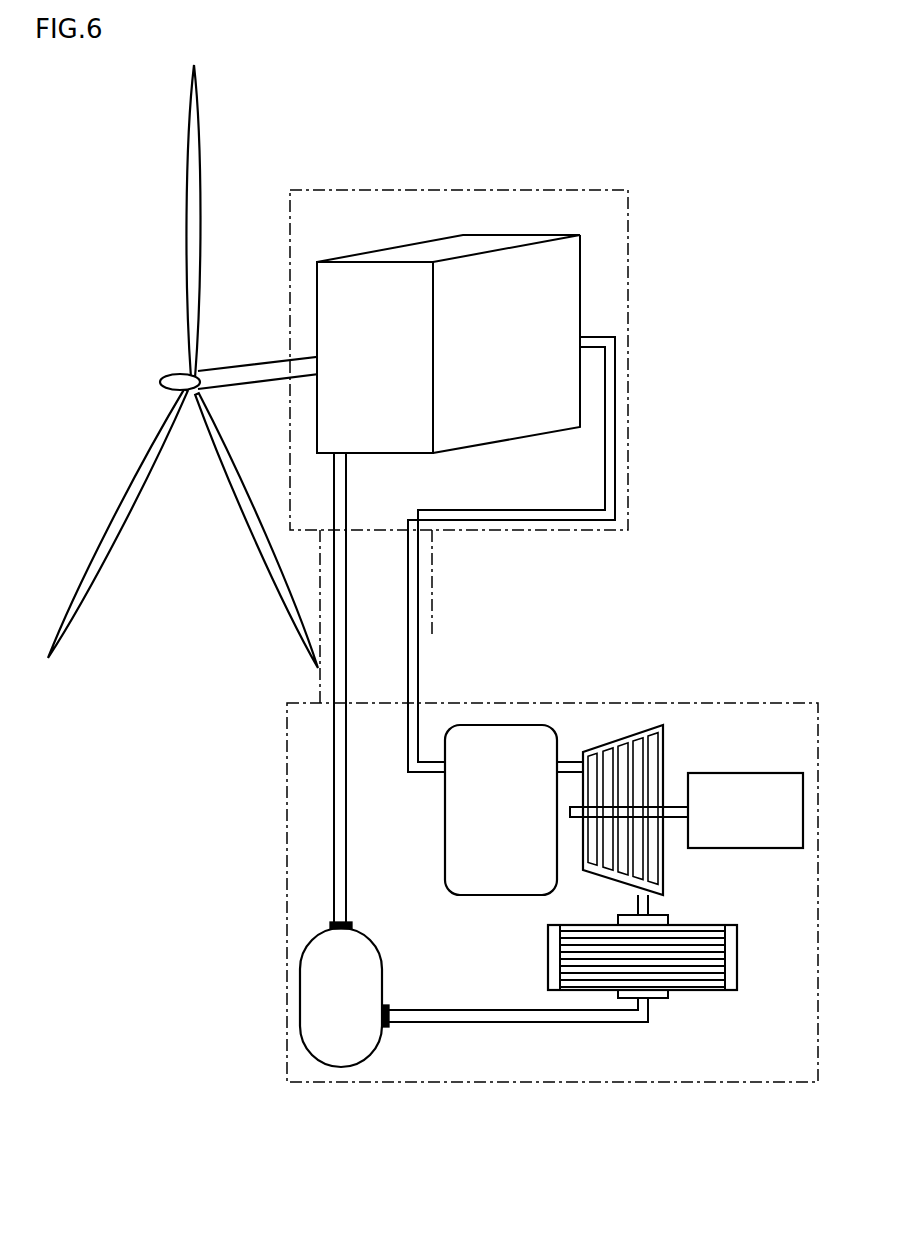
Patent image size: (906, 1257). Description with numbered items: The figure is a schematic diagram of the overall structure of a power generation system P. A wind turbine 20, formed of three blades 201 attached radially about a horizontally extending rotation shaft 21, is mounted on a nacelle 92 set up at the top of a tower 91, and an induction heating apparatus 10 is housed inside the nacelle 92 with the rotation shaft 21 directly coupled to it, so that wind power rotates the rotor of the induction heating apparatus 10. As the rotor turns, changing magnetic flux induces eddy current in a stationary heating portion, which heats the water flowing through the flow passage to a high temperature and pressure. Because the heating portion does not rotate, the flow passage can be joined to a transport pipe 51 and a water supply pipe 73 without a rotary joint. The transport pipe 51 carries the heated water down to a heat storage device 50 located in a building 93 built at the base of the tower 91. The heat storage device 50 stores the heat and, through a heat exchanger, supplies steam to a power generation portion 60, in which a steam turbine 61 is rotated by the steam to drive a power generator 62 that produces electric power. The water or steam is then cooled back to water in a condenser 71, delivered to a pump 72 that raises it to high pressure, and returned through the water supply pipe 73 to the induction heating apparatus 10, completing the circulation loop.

The power generation system P is at (179, 366).
The induction heating apparatus 10 is at (532, 332).
The wind turbine 20 is at (179, 366).
The blades 201 is at (128, 502).
The rotation shaft 21 is at (236, 372).
The heat storage device 50 is at (500, 740).
The transport pipe 51 is at (612, 432).
The power generation portion 60 is at (686, 741).
The steam turbine 61 is at (620, 742).
The power generator 62 is at (745, 740).
The condenser 71 is at (737, 960).
The pump 72 is at (300, 993).
The water supply pipe 73 is at (335, 742).
The tower 91 is at (432, 632).
The nacelle 92 is at (340, 188).
The building 93 is at (287, 847).